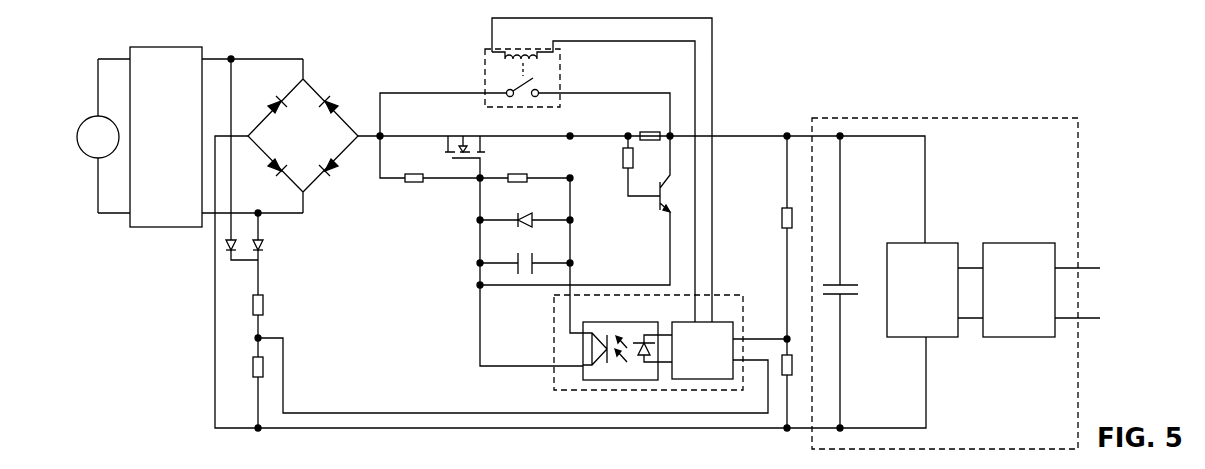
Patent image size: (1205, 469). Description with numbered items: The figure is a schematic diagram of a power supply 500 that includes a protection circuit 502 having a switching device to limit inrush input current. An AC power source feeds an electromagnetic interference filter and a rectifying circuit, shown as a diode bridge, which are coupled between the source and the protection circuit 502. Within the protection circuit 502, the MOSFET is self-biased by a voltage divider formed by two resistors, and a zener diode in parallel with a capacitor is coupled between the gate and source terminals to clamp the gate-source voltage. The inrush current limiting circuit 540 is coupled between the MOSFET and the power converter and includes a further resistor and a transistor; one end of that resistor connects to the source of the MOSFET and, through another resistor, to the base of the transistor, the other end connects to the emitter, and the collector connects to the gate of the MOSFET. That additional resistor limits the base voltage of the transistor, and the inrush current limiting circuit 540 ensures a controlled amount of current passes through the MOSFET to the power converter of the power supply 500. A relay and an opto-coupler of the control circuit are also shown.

The power supply 500 is at (617, 231).
The protection circuit 502 is at (440, 235).
The inrush current limiting circuit 540 is at (618, 201).